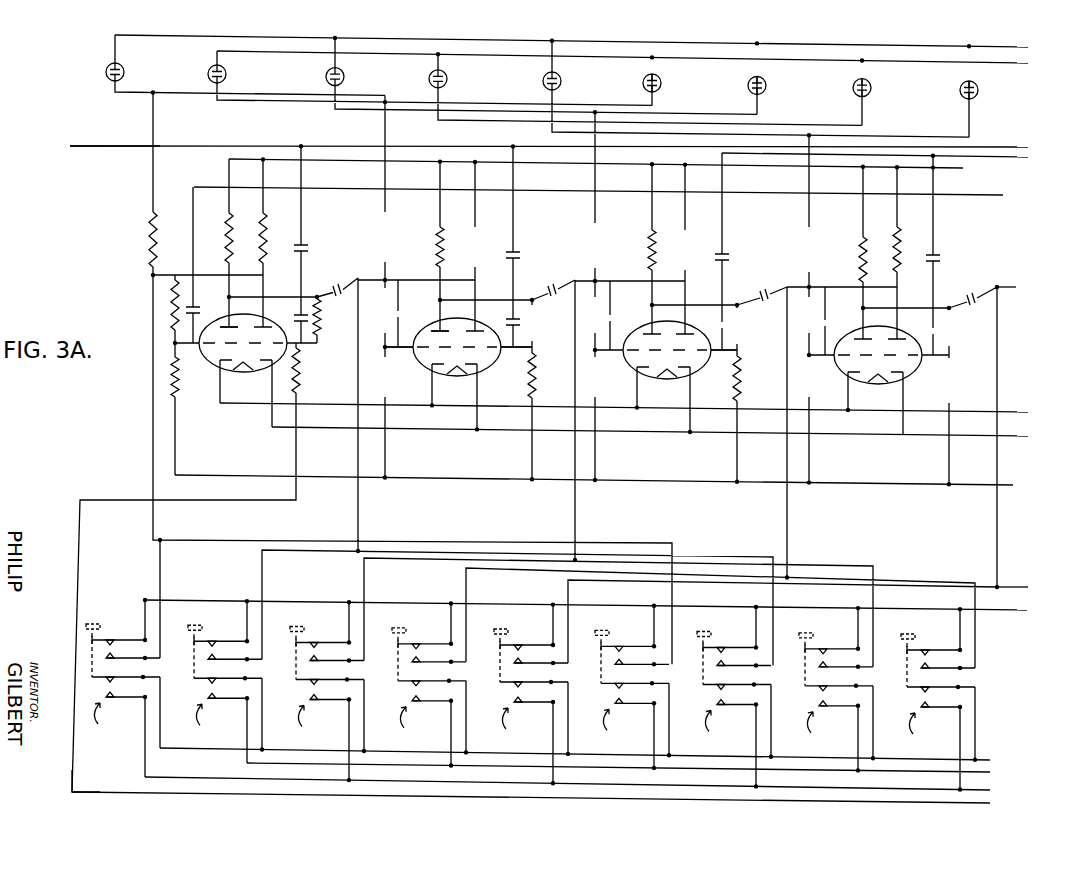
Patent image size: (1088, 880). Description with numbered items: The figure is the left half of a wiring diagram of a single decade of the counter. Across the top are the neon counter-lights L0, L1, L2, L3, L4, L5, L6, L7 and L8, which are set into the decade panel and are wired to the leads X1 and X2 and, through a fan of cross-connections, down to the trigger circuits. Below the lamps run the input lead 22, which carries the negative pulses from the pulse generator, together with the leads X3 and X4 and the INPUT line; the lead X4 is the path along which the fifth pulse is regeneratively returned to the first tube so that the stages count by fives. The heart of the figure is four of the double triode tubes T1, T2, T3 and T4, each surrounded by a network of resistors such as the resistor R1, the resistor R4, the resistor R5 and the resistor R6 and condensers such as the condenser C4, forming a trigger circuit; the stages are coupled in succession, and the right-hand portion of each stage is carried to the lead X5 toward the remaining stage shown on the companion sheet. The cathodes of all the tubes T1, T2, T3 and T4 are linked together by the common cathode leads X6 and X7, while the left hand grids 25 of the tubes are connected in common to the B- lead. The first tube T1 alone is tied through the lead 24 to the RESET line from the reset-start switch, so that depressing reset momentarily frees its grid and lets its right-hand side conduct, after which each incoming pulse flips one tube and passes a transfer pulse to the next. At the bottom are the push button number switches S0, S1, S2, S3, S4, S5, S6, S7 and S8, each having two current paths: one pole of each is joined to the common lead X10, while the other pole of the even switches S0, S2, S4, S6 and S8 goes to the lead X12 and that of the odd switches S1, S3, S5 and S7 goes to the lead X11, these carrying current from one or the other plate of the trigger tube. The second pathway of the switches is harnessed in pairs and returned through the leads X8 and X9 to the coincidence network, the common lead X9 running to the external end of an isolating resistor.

The neon lamp L0 is at (133, 73).
The neon lamp L1 is at (235, 75).
The neon lamp L2 is at (353, 78).
The neon lamp L3 is at (447, 82).
The neon lamp L4 is at (561, 84).
The neon lamp L5 is at (661, 86).
The neon lamp L6 is at (766, 88).
The neon lamp L7 is at (871, 91).
The neon lamp L8 is at (978, 93).
The lead X1 is at (581, 46).
The lead X2 is at (632, 63).
The lead X3 is at (559, 149).
The lead X4 is at (609, 197).
The lead X5 is at (1016, 294).
The lead X6 is at (627, 416).
The lead X7 is at (653, 439).
The lead X8 is at (1022, 594).
The common lead X9 is at (595, 611).
The common lead X10 is at (589, 760).
The lead X11 is at (630, 775).
The lead X12 is at (580, 790).
The input lead INPUT is at (894, 160).
The B- lead B- is at (604, 484).
The reset lead RESET is at (549, 804).
The input lead 22 is at (71, 145).
The lead 24 is at (87, 792).
The resistor R1 is at (149, 232).
The resistor R4 is at (169, 299).
The resistor R5 is at (168, 360).
The resistor R6 is at (322, 333).
The condenser C4 is at (212, 308).
The double triode tube T1 is at (207, 375).
The double triode tube T2 is at (421, 376).
The double triode tube T3 is at (629, 378).
The double triode tube T4 is at (837, 378).
The left hand grid 25 is at (423, 348).
The push button switch S0 is at (123, 674).
The push button switch S1 is at (225, 675).
The push button switch S2 is at (327, 678).
The push button switch S3 is at (429, 678).
The push button switch S4 is at (531, 679).
The push button switch S5 is at (632, 680).
The push button switch S6 is at (734, 683).
The push button switch S7 is at (836, 683).
The push button switch S8 is at (938, 684).